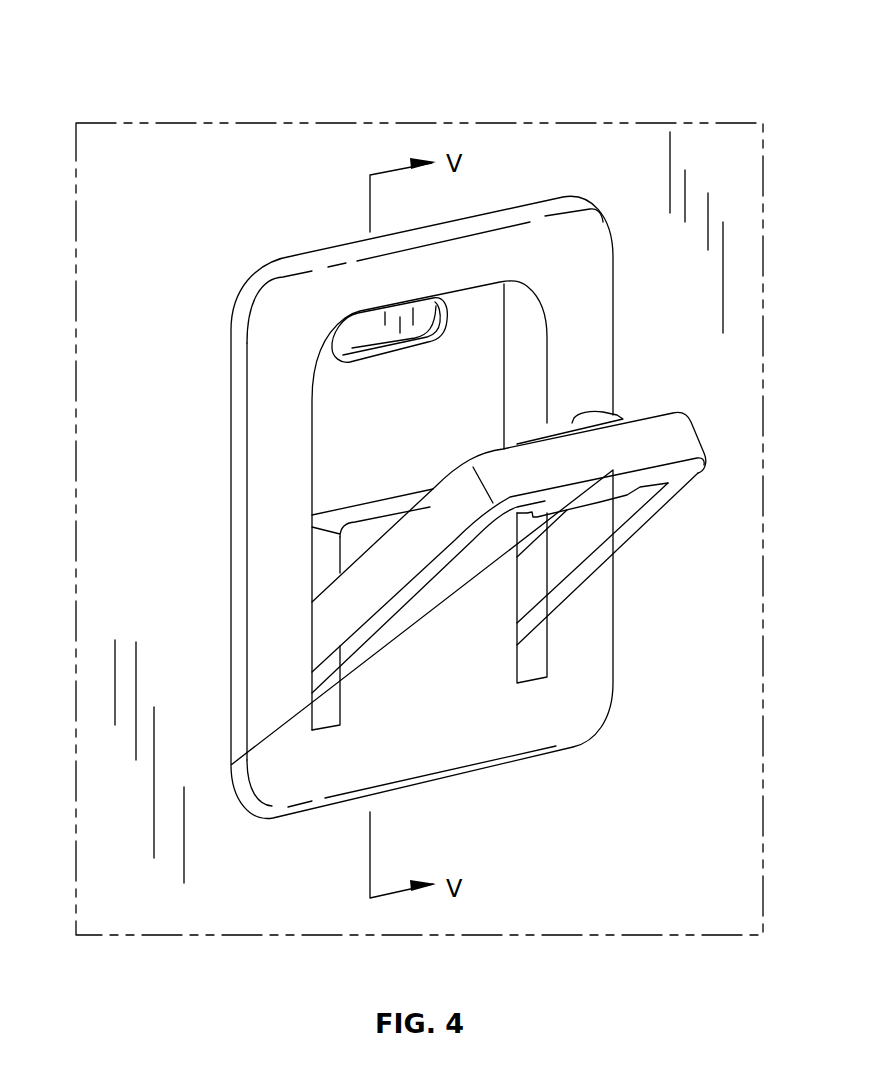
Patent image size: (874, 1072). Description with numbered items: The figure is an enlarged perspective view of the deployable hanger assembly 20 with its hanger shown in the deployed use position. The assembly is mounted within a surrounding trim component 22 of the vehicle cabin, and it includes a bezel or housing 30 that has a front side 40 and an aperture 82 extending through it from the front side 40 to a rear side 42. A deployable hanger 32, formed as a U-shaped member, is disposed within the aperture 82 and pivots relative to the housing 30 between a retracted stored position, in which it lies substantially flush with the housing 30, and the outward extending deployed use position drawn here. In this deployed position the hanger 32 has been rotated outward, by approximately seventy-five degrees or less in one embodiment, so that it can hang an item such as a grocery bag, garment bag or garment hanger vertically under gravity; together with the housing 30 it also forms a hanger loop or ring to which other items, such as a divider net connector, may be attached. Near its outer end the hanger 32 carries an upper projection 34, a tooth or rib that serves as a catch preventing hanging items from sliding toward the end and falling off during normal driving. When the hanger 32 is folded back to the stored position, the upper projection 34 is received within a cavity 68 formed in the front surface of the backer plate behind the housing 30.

The deployable hanger assembly 20 is at (573, 170).
The trim component 22 is at (142, 735).
The housing 30 is at (577, 345).
The deployable hanger 32 is at (687, 470).
The upper projection 34 is at (573, 421).
The front side 40 is at (458, 728).
The rear side 42 is at (231, 480).
The cavity 68 is at (368, 332).
The aperture 82 is at (378, 402).